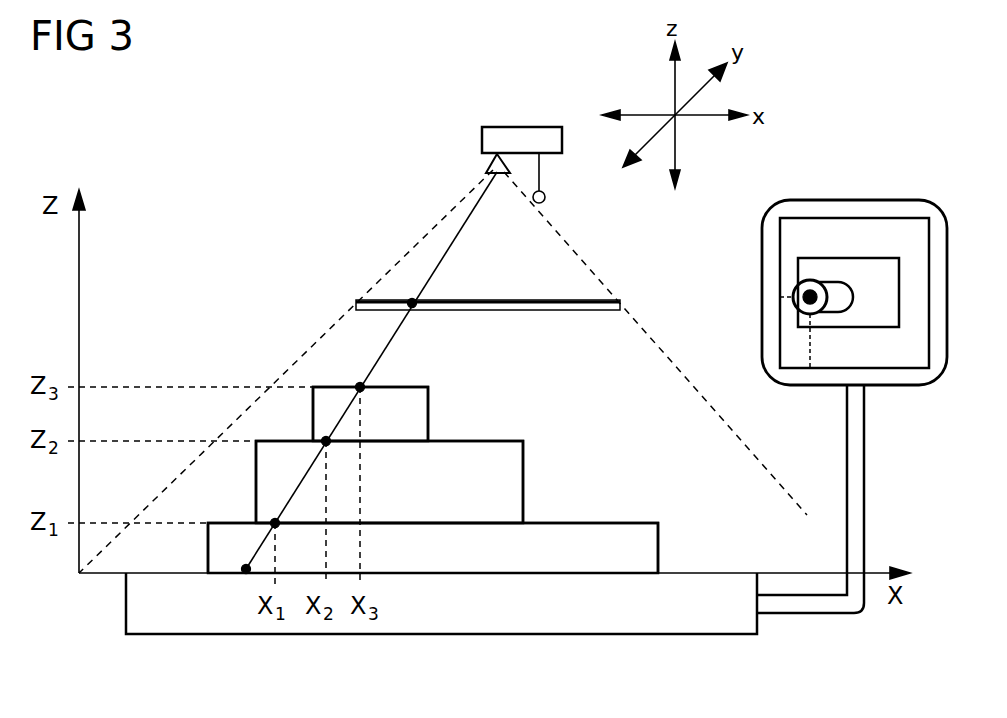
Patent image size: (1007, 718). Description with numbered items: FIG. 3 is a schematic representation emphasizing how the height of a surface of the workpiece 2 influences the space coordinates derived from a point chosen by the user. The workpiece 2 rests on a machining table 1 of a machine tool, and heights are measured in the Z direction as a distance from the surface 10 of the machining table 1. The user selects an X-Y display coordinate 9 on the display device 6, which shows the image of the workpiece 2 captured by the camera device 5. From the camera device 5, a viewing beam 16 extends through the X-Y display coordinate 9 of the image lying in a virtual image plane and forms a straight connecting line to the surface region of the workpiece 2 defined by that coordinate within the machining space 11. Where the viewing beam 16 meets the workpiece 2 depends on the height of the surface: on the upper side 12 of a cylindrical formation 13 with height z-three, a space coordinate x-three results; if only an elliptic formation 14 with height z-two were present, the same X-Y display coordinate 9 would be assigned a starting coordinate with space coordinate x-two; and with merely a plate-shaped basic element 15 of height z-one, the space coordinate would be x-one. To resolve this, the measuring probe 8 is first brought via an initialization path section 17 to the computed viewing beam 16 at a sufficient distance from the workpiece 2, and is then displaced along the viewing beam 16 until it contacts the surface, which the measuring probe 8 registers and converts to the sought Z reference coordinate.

The machining table 1 is at (138, 607).
The workpiece 2 is at (844, 247).
The camera device 5 is at (488, 160).
The display device 6 is at (862, 200).
The measuring probe 8 is at (546, 195).
The X-Y display coordinate 9 is at (396, 290).
The surface of the machining table 10 is at (712, 572).
The machining space 11 is at (299, 210).
The upper side 12 is at (398, 372).
The cylindrical formation 13 is at (333, 400).
The elliptic formation 14 is at (453, 508).
The plate-shaped basic element 15 is at (610, 556).
The viewing beam 16 is at (440, 257).
The initialization path section 17 is at (600, 297).